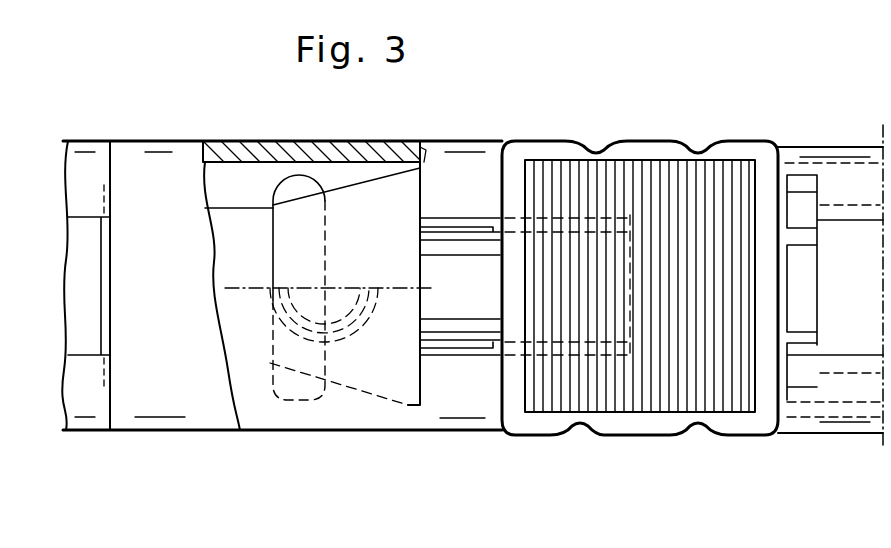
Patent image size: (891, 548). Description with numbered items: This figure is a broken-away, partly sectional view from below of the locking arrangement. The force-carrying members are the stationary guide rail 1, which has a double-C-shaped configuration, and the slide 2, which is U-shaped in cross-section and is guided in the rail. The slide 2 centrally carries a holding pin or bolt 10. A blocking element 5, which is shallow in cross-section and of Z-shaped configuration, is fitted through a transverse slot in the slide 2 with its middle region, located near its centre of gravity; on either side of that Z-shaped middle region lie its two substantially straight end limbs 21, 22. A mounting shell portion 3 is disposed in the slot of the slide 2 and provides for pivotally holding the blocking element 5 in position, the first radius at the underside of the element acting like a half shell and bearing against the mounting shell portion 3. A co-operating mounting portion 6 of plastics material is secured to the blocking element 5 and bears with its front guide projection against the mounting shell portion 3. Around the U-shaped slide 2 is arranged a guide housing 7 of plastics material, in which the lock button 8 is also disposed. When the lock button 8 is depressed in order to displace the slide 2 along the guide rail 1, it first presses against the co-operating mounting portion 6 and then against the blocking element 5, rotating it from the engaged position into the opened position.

The stationary guide rail 1 is at (77, 263).
The slide 2 is at (233, 230).
The mounting shell portion 3 is at (462, 228).
The blocking element 5 is at (398, 215).
The co-operating mounting portion 6 is at (455, 308).
The guide housing 7 is at (432, 180).
The lock button 8 is at (617, 182).
The holding pin or bolt 10 is at (327, 320).
The end limb 21 is at (305, 184).
The end limb 22 is at (588, 323).